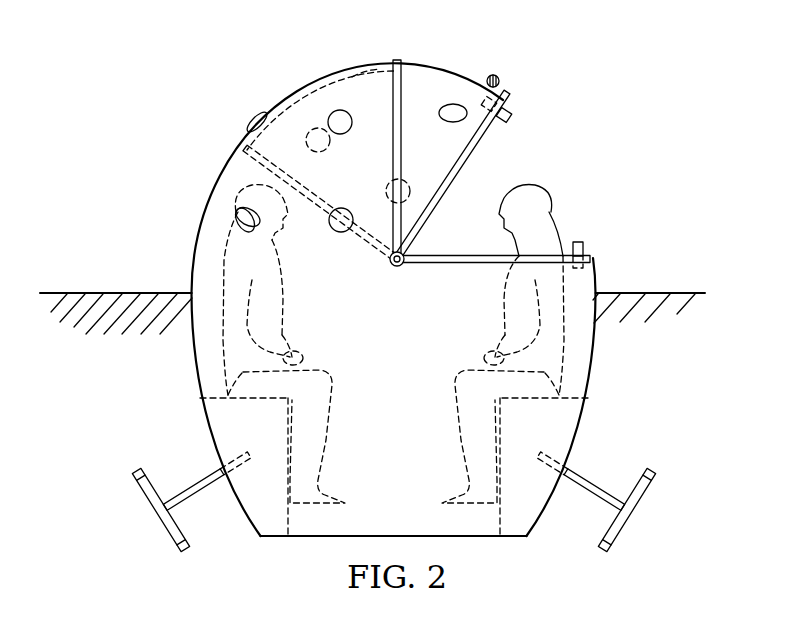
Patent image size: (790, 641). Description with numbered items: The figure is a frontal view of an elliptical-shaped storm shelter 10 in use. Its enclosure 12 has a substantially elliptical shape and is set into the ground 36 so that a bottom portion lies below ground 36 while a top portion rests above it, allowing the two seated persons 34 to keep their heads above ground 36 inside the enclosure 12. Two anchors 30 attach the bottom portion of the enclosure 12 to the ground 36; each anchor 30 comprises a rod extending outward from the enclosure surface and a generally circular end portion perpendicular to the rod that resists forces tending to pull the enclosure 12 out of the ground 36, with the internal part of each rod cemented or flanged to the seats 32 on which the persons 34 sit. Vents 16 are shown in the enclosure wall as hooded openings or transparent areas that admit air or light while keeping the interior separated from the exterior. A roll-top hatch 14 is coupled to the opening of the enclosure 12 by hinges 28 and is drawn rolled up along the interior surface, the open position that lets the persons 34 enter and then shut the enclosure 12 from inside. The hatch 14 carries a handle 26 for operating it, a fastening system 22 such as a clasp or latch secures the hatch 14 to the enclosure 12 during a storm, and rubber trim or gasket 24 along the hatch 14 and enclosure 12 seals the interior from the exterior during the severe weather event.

The shelter 10 is at (164, 174).
The enclosure 12 is at (192, 255).
The hatch 14 is at (431, 65).
The vents 16 is at (453, 104).
The fastening system 22 is at (509, 119).
The rubber trim or gasket 24 is at (510, 98).
The handle 26 is at (496, 75).
The hinges 28 is at (391, 266).
The anchors 30 is at (167, 527).
The seats 32 is at (222, 396).
The persons 34 is at (222, 171).
The ground 36 is at (93, 292).